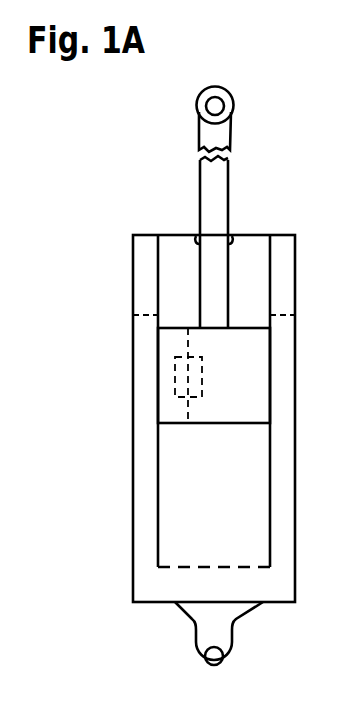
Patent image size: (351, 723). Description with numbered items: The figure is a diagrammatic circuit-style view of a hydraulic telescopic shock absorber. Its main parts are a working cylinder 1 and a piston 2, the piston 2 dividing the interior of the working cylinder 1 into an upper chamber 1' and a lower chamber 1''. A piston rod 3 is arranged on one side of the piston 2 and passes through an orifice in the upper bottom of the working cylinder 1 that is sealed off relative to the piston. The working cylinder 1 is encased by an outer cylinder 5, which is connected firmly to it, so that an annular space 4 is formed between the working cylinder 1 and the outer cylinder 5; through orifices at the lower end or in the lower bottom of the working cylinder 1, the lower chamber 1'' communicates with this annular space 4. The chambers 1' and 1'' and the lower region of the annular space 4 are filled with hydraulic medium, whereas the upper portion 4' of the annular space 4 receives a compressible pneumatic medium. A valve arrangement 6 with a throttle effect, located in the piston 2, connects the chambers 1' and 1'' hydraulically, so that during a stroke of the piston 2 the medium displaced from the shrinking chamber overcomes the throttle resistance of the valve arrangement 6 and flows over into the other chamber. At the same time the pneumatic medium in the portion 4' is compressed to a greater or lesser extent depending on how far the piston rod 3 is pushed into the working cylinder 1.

The working cylinder 1 is at (178, 401).
The chamber 1' is at (214, 281).
The chamber 1'' is at (214, 495).
The piston 2 is at (170, 410).
The piston rod 3 is at (209, 178).
The annular space 4 is at (192, 331).
The upper portion of the annular space 4' is at (123, 275).
The outer cylinder 5 is at (133, 256).
The valve arrangement 6 is at (178, 377).